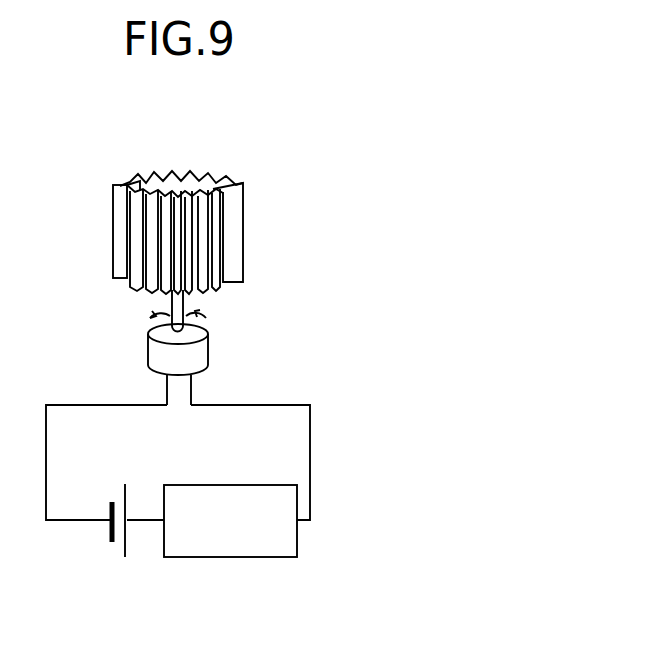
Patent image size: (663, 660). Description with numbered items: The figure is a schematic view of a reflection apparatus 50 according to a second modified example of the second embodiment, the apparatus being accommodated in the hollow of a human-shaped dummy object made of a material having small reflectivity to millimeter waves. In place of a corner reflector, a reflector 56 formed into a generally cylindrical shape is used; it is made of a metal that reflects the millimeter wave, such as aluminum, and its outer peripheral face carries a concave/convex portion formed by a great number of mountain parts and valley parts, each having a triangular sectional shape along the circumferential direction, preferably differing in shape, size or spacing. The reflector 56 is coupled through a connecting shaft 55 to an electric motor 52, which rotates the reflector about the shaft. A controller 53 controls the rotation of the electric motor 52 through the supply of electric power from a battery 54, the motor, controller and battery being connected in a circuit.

The reflection apparatus 50 is at (240, 359).
The electric motor 52 is at (148, 357).
The controller 53 is at (222, 557).
The battery 54 is at (125, 552).
The connecting shaft 55 is at (172, 301).
The reflector 56 is at (243, 223).